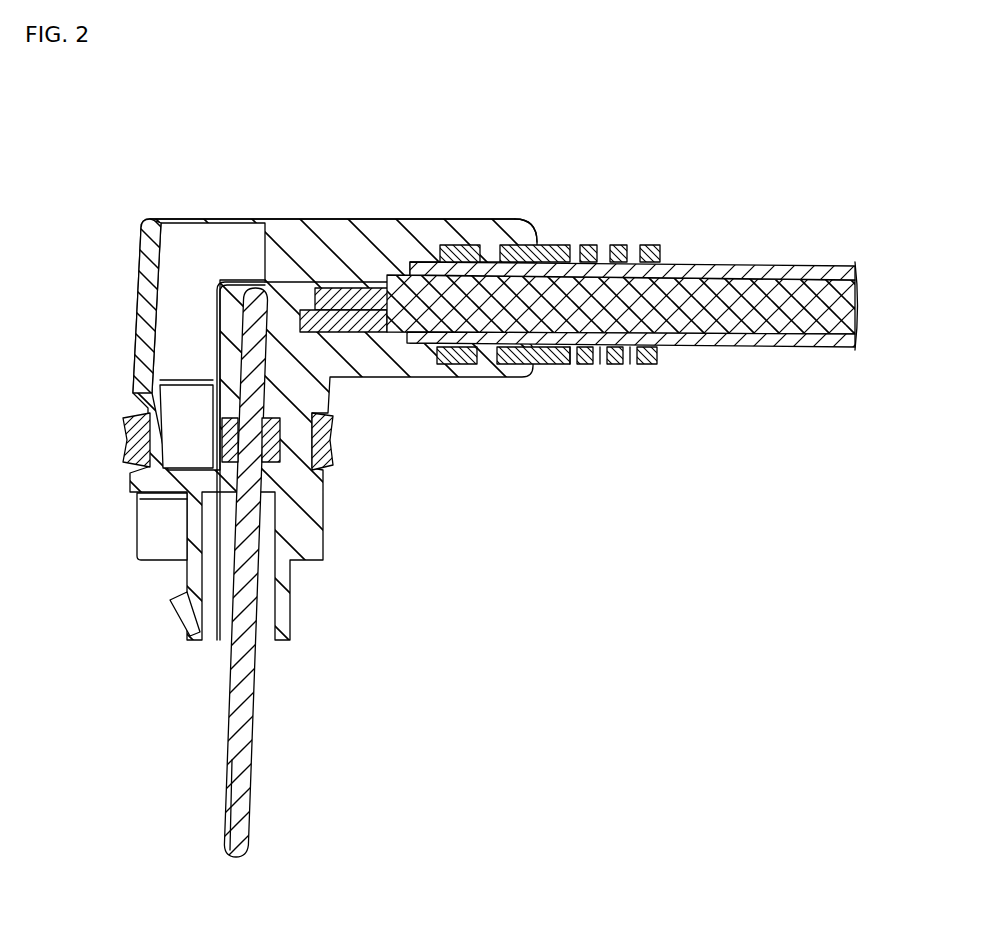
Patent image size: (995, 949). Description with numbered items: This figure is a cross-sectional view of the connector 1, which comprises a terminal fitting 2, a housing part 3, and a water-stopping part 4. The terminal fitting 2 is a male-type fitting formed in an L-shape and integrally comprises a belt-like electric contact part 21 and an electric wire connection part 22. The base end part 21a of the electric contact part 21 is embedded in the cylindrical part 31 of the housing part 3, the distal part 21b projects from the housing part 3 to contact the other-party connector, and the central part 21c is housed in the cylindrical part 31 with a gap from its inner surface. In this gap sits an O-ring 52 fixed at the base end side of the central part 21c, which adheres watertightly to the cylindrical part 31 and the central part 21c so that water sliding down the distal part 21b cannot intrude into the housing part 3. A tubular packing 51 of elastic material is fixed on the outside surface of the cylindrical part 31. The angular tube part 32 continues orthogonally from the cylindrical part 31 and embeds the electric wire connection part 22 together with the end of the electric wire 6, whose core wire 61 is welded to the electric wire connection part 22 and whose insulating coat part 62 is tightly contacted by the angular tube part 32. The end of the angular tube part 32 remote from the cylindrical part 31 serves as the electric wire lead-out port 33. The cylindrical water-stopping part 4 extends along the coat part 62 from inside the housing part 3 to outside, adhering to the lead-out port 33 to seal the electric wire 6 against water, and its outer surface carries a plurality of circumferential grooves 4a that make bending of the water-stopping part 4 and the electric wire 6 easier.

The connector 1 is at (648, 177).
The terminal fitting 2 is at (279, 591).
The housing part 3 is at (485, 398).
The water-stopping part 4 is at (556, 222).
The groove 4a is at (628, 360).
The electric wire 6 is at (580, 296).
The electric contact part 21 is at (256, 613).
The base end part 21a is at (250, 364).
The distal part 21b is at (228, 740).
The central part 21c is at (234, 525).
The electric wire connection part 22 is at (372, 396).
The cylindrical part 31 is at (133, 352).
The angular tube part 32 is at (395, 218).
The electric wire lead-out port 33 is at (488, 219).
The tubular packing 51 is at (124, 440).
The O-ring 52 is at (283, 448).
The core wire 61 is at (754, 342).
The coat part 62 is at (796, 350).